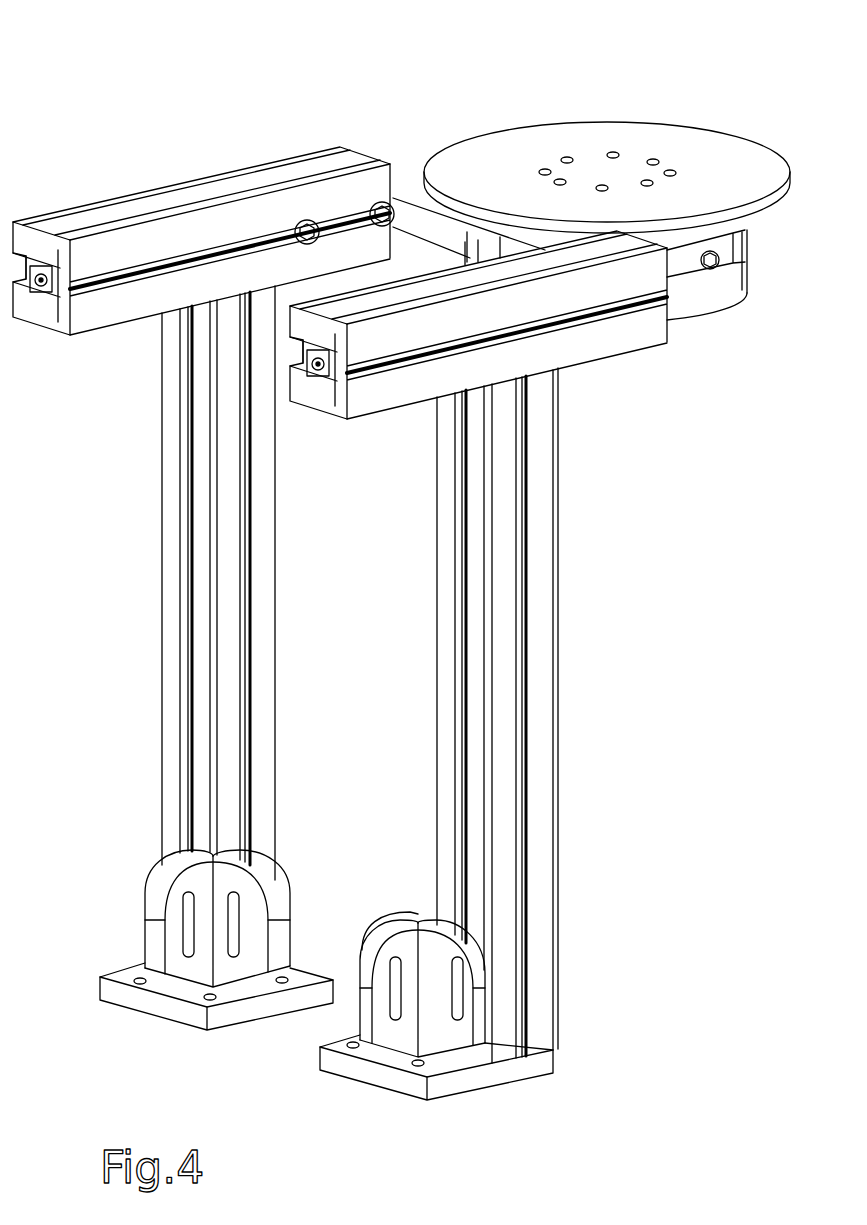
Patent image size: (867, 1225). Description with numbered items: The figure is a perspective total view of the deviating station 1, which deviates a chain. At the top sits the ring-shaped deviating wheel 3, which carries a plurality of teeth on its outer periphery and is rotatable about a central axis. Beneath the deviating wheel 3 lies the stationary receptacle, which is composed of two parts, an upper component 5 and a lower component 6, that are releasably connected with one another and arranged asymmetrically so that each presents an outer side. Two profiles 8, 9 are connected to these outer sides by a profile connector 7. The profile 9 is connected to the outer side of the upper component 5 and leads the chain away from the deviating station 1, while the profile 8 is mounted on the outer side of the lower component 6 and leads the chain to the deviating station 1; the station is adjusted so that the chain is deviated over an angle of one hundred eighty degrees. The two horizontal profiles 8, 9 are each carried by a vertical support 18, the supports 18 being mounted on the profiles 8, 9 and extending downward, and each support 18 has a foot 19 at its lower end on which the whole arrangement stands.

The deviating station 1 is at (427, 58).
The deviating wheel 3 is at (712, 153).
The upper component 5 is at (413, 197).
The lower component 6 is at (733, 278).
The profile connector 7 is at (682, 265).
The profile 8 is at (607, 347).
The profile 9 is at (185, 199).
The supports 18 is at (170, 596).
The foot 19 is at (127, 977).